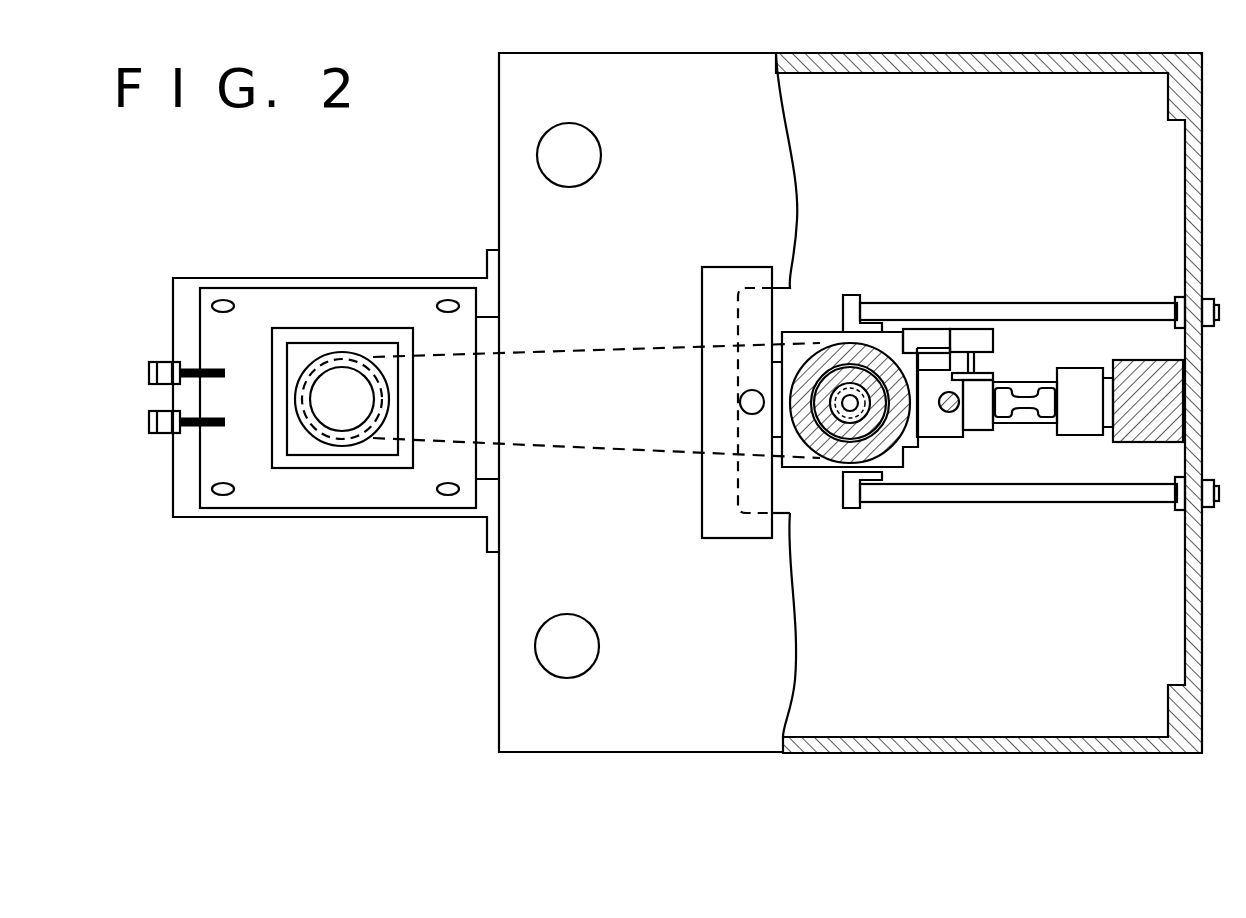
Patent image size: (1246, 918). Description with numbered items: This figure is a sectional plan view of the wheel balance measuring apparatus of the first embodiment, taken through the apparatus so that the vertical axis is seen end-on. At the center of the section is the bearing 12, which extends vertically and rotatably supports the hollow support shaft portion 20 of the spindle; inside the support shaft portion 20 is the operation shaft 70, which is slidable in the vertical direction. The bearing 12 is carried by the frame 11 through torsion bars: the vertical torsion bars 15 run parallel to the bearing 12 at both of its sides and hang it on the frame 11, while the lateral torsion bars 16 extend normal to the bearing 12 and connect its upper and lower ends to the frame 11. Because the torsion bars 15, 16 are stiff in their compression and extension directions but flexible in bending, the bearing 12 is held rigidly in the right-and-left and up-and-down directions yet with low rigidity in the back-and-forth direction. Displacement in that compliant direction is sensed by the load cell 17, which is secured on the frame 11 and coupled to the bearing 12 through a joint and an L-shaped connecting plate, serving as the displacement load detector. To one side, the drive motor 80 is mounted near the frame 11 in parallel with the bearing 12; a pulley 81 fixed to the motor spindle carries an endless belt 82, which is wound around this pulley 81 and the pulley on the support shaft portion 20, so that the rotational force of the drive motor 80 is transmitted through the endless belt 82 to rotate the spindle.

The frame 11 is at (940, 757).
The bearing 12 is at (822, 332).
The vertical torsion bars 15 is at (750, 414).
The lateral torsion bars 16 is at (1047, 303).
The load cell 17 is at (1024, 423).
The support shaft portion 20 is at (822, 467).
The operation shaft 70 is at (887, 455).
The drive motor 80 is at (322, 440).
The pulley 81 is at (297, 418).
The endless belt 82 is at (598, 448).